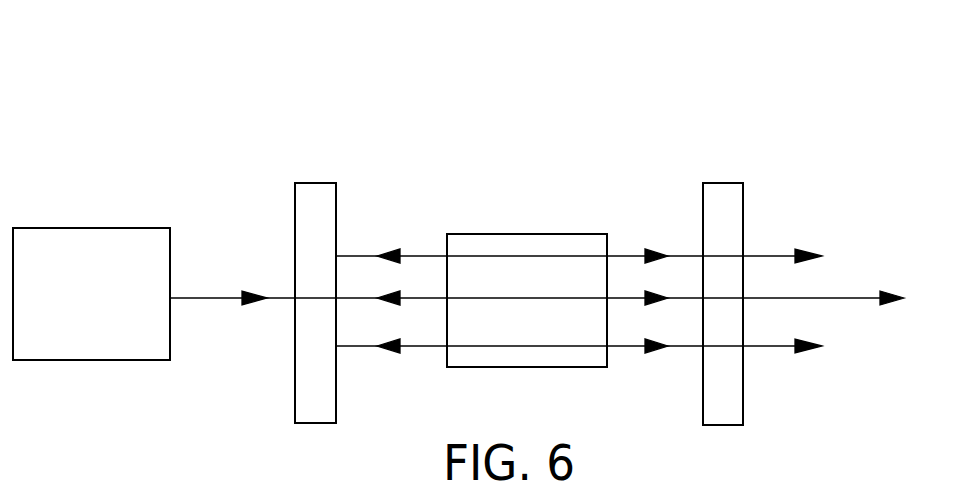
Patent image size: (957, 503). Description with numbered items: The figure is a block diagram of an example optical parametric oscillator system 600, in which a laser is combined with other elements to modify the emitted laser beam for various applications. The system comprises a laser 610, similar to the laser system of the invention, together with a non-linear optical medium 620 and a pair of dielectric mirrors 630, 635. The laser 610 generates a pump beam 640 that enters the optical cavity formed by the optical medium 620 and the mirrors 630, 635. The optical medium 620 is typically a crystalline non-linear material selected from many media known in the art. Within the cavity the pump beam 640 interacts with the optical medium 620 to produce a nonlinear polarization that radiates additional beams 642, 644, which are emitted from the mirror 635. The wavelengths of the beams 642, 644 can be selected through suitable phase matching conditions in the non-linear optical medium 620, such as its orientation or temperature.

The optical parametric oscillator system 600 is at (196, 88).
The laser 610 is at (118, 228).
The non-linear optical medium 620 is at (522, 234).
The dielectric mirror 630 is at (322, 183).
The dielectric mirror 635 is at (726, 183).
The pump beam 640 is at (213, 300).
The beam 642 is at (764, 255).
The beam 644 is at (771, 348).